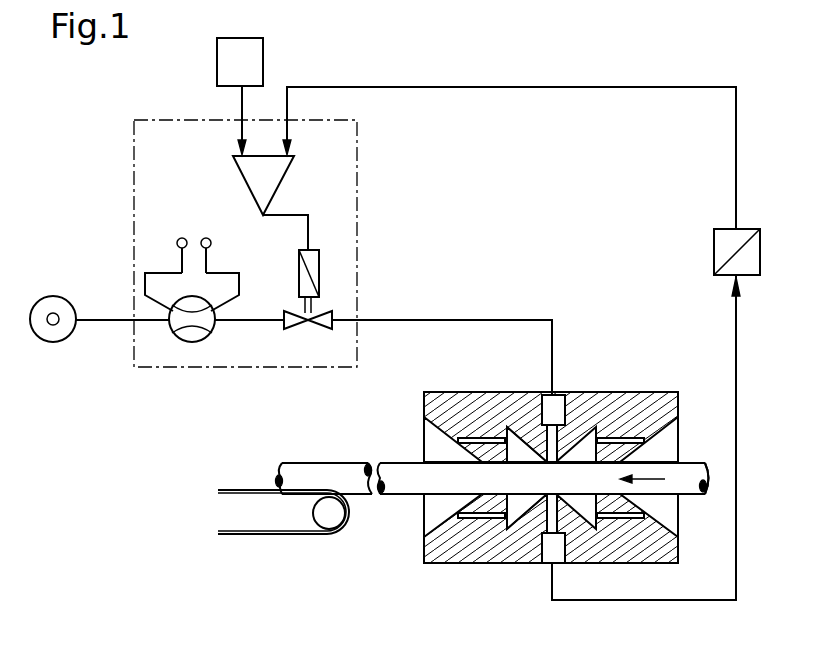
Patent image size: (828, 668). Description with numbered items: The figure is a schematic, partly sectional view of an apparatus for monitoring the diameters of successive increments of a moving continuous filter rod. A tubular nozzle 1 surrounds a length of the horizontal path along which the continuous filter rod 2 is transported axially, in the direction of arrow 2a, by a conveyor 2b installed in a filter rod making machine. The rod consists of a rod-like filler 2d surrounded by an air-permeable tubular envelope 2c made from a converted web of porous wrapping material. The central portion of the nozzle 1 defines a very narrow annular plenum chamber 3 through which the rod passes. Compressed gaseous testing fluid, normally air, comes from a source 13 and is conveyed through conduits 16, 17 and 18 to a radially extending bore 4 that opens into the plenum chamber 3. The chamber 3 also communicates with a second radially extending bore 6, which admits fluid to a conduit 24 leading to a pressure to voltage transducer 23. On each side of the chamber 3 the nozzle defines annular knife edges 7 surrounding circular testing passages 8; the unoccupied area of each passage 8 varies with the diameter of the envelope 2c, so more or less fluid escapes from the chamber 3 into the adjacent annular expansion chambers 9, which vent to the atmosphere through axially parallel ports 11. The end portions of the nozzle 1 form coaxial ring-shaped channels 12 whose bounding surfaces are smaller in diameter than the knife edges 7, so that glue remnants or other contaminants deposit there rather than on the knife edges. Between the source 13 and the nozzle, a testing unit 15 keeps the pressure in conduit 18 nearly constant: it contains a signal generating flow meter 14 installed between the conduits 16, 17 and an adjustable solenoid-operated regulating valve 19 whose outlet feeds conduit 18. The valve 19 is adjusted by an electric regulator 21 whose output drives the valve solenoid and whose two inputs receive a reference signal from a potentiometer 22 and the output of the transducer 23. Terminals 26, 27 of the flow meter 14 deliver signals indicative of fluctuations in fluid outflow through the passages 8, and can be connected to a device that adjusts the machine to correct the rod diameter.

The tubular nozzle 1 is at (612, 390).
The continuous filter rod 2 is at (394, 485).
The arrow 2a is at (650, 473).
The conveyor 2b is at (279, 540).
The tubular envelope 2c is at (395, 461).
The rod-like filler 2d is at (712, 487).
The annular plenum chamber 3 is at (560, 500).
The radially extending bore 4 is at (555, 405).
The second radially extending bore 6 is at (546, 555).
The annular knife edges 7 is at (538, 457).
The testing passages 8 is at (540, 500).
The annular expansion chambers 9 is at (512, 513).
The axially parallel ports 11 is at (472, 515).
The ring-shaped channels 12 is at (491, 458).
The source of compressed gaseous testing fluid 13 is at (60, 343).
The signal generating flow meter 14 is at (181, 345).
The testing unit 15 is at (133, 150).
The conduit 16 is at (107, 319).
The conduit 17 is at (244, 325).
The conduit 18 is at (432, 318).
The solenoid-operated regulating valve 19 is at (325, 290).
The electric regulator 21 is at (275, 176).
The potentiometer 22 is at (265, 57).
The pressure to voltage transducer 23 is at (714, 248).
The conduit 24 is at (673, 601).
The terminal 26 is at (179, 238).
The terminal 27 is at (206, 238).